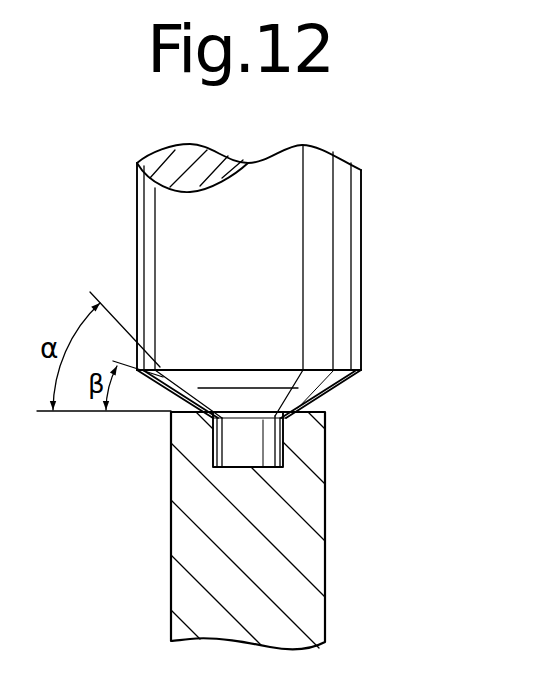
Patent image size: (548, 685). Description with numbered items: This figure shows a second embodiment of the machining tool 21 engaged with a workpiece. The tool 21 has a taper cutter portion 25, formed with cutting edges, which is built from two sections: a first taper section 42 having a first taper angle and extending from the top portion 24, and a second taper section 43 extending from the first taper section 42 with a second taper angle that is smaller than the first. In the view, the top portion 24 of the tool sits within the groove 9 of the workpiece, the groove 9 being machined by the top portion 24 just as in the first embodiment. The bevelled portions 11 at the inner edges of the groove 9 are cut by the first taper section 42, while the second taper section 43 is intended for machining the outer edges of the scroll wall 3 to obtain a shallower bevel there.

The tool 21 is at (372, 250).
The taper cutter portion 25 is at (307, 398).
The second taper section 43 is at (346, 375).
The first taper section 42 is at (298, 410).
The bevelled portions 11 is at (205, 404).
The groove 9 is at (225, 461).
The top portion 24 is at (275, 443).
The scroll wall 3 is at (325, 565).